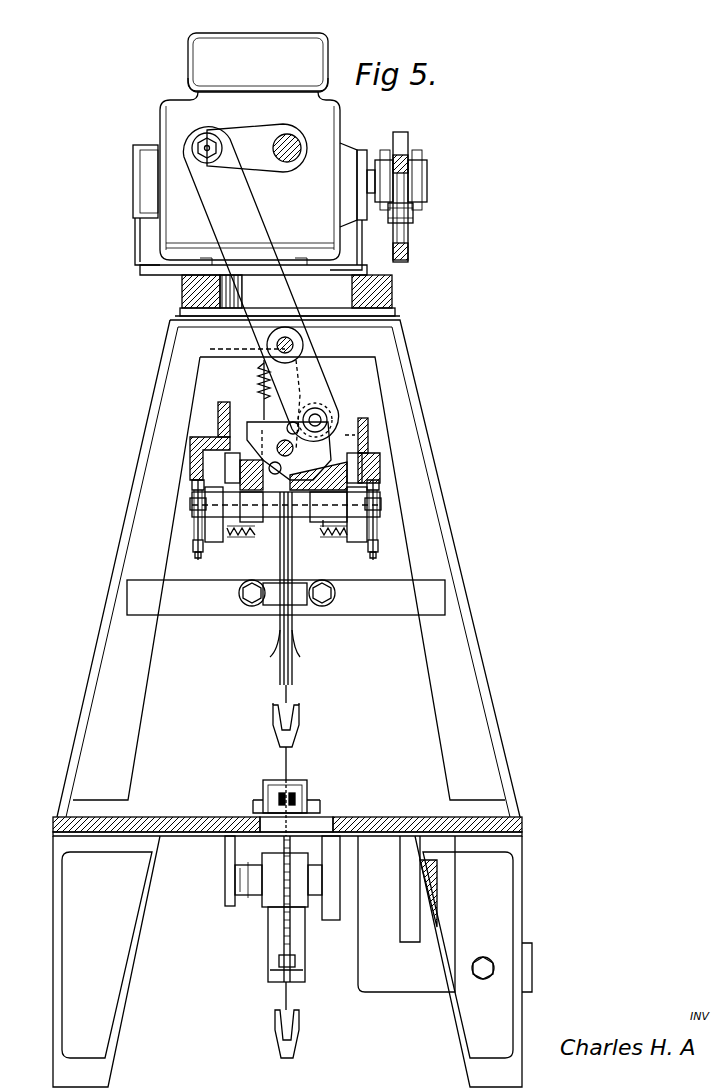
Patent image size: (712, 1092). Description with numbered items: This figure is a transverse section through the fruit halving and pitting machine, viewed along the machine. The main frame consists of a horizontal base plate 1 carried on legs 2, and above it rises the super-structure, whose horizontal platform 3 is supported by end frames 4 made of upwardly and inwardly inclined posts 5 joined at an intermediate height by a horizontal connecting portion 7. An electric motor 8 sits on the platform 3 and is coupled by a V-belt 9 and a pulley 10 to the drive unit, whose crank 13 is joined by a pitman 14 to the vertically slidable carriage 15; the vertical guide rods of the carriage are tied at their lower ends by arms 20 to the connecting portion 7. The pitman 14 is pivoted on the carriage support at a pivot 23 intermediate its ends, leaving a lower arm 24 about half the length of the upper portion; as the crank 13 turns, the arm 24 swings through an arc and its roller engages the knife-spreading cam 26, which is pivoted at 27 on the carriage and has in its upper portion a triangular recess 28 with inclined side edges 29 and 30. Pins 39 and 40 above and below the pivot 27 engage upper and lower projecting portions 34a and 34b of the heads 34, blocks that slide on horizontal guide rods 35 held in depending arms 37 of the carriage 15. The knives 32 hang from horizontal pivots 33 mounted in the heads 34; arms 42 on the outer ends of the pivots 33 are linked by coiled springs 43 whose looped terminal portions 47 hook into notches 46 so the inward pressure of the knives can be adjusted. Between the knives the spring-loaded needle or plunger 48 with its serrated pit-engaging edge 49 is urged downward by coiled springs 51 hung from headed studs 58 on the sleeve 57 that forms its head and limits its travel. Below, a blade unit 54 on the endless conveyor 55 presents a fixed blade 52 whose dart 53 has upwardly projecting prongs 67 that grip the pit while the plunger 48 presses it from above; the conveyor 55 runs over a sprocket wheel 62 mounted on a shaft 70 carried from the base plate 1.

The base plate 1 is at (180, 818).
The legs 2 is at (53, 1004).
The platform 3 is at (392, 296).
The end frames 4 is at (115, 531).
The posts 5 is at (108, 556).
The horizontal connecting portion 7 is at (360, 615).
The electric motor 8 is at (160, 120).
The V-belt 9 is at (408, 258).
The pulley 10 is at (413, 214).
The crank 13 is at (250, 134).
The pitman 14 is at (260, 228).
The carriage 15 is at (378, 432).
The arms or portions 20 is at (270, 608).
The pivot 23 is at (272, 341).
The lower arm 24 is at (322, 415).
The knife-spreading cam 26 is at (380, 448).
The pivot 27 is at (290, 457).
The triangular recess 28 is at (382, 474).
The inclined side edge 29 is at (330, 440).
The inclined side edge 30 is at (262, 430).
The knives 32 is at (300, 640).
The horizontal pivots 33 is at (190, 503).
The heads 34 is at (262, 520).
The upper horizontally projecting portion 34a is at (248, 430).
The lower horizontally projecting portion 34b is at (322, 522).
The horizontal guide rods 35 is at (380, 462).
The depending arms or portions 37 is at (225, 468).
The upper pin 39 is at (298, 424).
The lower pin 40 is at (215, 452).
The arms 42 is at (192, 528).
The coiled springs 43 is at (195, 553).
The notches 46 is at (193, 540).
The looped terminal portions 47 is at (203, 552).
The needle or plunger 48 is at (293, 673).
The pit-engaging edge 49 is at (290, 686).
The coiled springs 51 is at (262, 368).
The fixed blade 52 is at (284, 757).
The dart 53 is at (274, 730).
The blade unit 54 is at (300, 790).
The endless conveyor 55 is at (298, 800).
The sleeve 57 is at (305, 368).
The headed studs or projections 58 is at (210, 349).
The pulley or sprocket wheel 62 is at (280, 932).
The prongs 67 is at (273, 710).
The shaft 70 is at (316, 905).